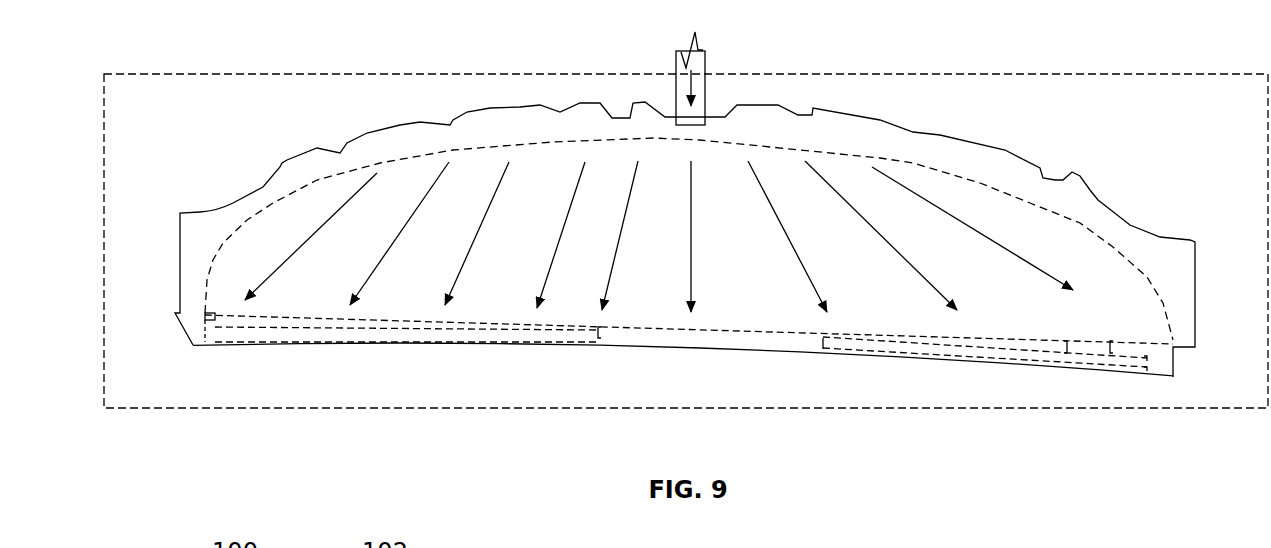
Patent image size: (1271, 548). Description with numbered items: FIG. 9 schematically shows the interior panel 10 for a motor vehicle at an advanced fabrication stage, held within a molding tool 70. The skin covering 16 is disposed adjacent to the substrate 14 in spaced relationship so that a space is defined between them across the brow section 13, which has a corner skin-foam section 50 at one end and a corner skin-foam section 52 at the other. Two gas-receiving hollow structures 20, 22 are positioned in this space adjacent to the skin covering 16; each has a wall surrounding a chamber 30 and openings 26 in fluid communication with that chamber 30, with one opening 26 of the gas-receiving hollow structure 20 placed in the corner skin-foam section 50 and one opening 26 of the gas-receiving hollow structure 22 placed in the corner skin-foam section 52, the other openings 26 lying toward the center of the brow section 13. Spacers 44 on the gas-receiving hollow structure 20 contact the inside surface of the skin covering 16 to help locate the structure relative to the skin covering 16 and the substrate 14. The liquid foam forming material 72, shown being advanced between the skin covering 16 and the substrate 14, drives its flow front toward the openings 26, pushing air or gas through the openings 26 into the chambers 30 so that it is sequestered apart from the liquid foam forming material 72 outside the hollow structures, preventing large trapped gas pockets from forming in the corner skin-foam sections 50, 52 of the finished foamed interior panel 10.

The interior panel 10 is at (1005, 133).
The brow section 13 is at (725, 343).
The substrate 14 is at (1085, 225).
The skin covering 16 is at (1078, 174).
The gas-receiving hollow structure 20 is at (998, 355).
The gas-receiving hollow structure 22 is at (290, 330).
The opening 26 is at (208, 308).
The chamber 30 is at (483, 328).
The spacer 44 is at (1067, 347).
The corner skin-foam section 50 is at (1138, 390).
The corner skin-foam section 52 is at (210, 350).
The molding tool 70 is at (1225, 412).
The liquid foam forming material 72 is at (693, 85).